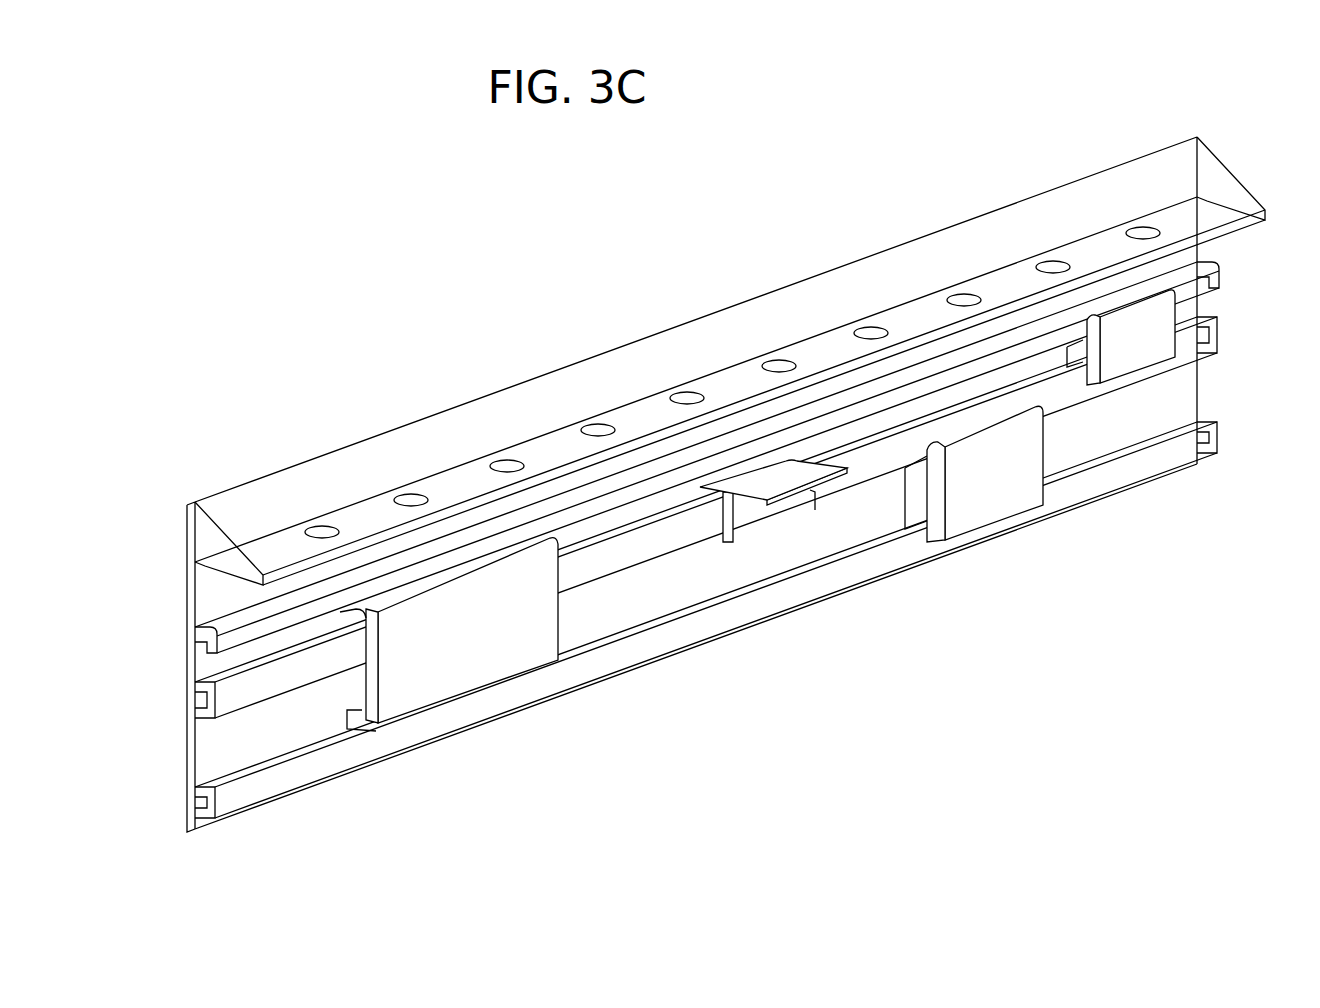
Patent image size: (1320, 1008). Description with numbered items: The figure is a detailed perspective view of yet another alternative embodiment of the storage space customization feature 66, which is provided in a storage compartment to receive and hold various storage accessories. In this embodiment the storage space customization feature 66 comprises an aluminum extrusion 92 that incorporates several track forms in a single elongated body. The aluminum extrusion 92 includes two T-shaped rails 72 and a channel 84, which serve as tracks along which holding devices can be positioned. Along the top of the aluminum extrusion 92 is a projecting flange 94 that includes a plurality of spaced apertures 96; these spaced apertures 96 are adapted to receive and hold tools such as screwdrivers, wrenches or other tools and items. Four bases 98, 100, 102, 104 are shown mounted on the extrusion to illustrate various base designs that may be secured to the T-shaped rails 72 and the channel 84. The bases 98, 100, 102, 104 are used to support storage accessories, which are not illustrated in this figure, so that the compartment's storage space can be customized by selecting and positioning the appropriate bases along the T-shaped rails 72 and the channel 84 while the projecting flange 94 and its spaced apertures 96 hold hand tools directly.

The storage space customization feature 66 is at (357, 388).
The T-shaped rails 72 is at (252, 695).
The channel 84 is at (223, 663).
The aluminum extrusion 92 is at (1048, 222).
The projecting flange 94 is at (460, 482).
The spaced apertures 96 is at (1143, 226).
The base 98 is at (473, 663).
The base 100 is at (778, 513).
The base 102 is at (998, 487).
The base 104 is at (1152, 345).